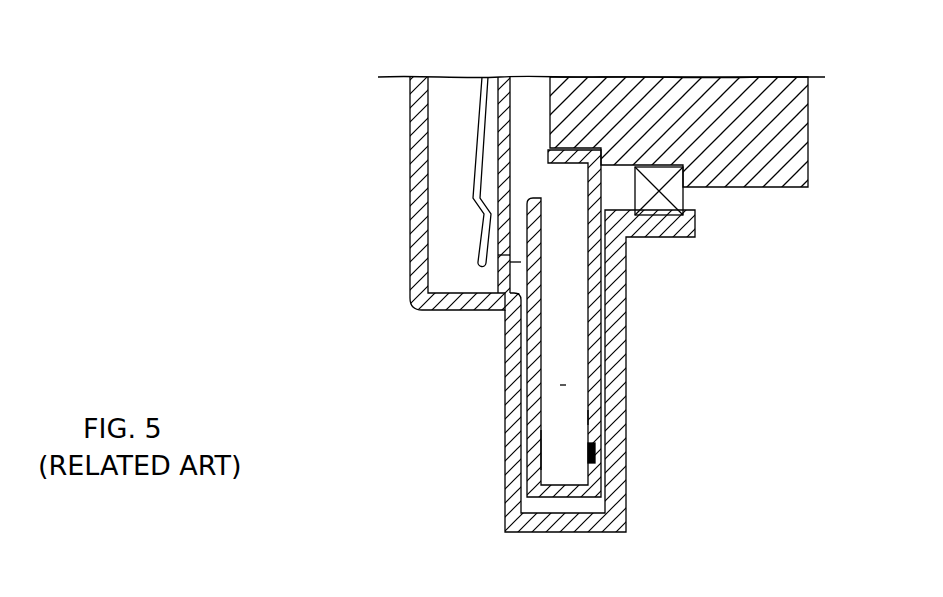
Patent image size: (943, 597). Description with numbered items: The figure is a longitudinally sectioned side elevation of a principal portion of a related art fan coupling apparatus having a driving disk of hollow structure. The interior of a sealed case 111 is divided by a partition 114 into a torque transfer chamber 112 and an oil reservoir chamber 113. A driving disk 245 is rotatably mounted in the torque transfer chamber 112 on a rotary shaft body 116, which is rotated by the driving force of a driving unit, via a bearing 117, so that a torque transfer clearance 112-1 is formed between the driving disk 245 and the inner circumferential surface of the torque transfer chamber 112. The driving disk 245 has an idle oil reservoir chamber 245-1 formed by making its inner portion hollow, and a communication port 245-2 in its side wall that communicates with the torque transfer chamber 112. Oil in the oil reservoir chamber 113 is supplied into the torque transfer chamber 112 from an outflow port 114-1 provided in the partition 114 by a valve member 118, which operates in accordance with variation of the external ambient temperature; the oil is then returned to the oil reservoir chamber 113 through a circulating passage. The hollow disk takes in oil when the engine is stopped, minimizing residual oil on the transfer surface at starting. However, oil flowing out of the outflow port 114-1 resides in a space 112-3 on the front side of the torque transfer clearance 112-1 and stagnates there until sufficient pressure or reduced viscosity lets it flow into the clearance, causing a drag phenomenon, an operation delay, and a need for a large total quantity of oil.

The sealed case 111 is at (617, 350).
The torque transfer chamber 112 is at (602, 305).
The torque transfer clearance 112-1 is at (593, 417).
The space 112-3 is at (522, 267).
The oil reservoir chamber 113 is at (462, 268).
The partition 114 is at (509, 75).
The outflow port 114-1 is at (503, 242).
The rotary shaft body 116 is at (730, 95).
The bearing 117 is at (683, 198).
The valve member 118 is at (473, 167).
The driving disk 245 is at (533, 448).
The idle oil reservoir chamber 245-1 is at (563, 390).
The communication port 245-2 is at (590, 457).